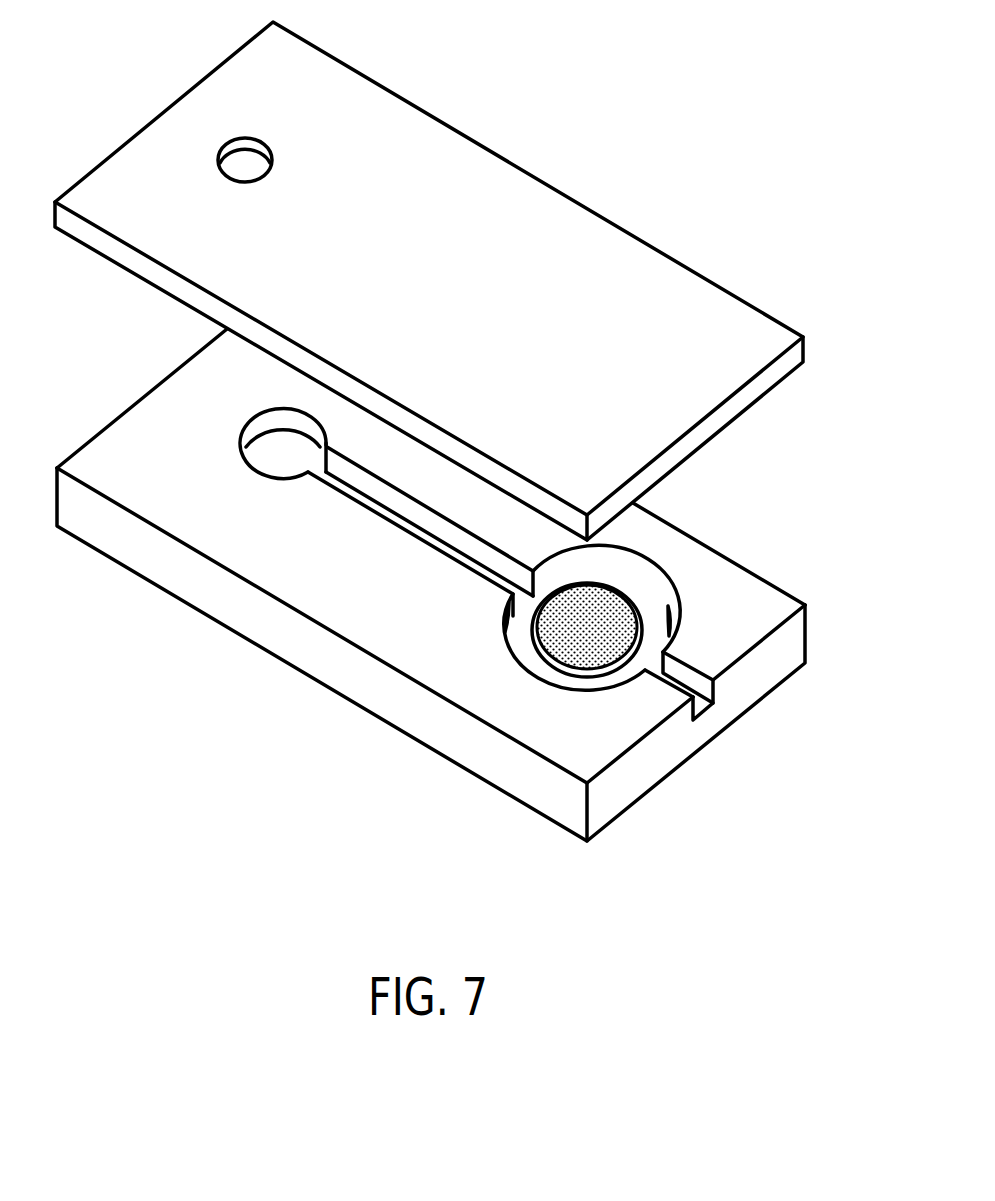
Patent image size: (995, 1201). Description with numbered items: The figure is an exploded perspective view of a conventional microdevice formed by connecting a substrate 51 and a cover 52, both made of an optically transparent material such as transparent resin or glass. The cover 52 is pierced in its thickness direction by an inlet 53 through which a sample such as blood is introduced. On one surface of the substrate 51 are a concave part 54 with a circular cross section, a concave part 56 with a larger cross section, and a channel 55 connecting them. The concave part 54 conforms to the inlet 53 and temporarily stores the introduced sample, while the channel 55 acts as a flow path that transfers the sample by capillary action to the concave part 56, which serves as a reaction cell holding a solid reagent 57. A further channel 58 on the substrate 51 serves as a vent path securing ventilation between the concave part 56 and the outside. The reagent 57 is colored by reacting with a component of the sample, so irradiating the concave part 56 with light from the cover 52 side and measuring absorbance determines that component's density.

The substrate 51 is at (737, 573).
The cover 52 is at (690, 303).
The inlet 53 is at (233, 136).
The concave part 54 is at (270, 447).
The channel 55 is at (373, 488).
The concave part 56 is at (542, 668).
The solid reagent 57 is at (580, 640).
The channel 58 is at (702, 683).